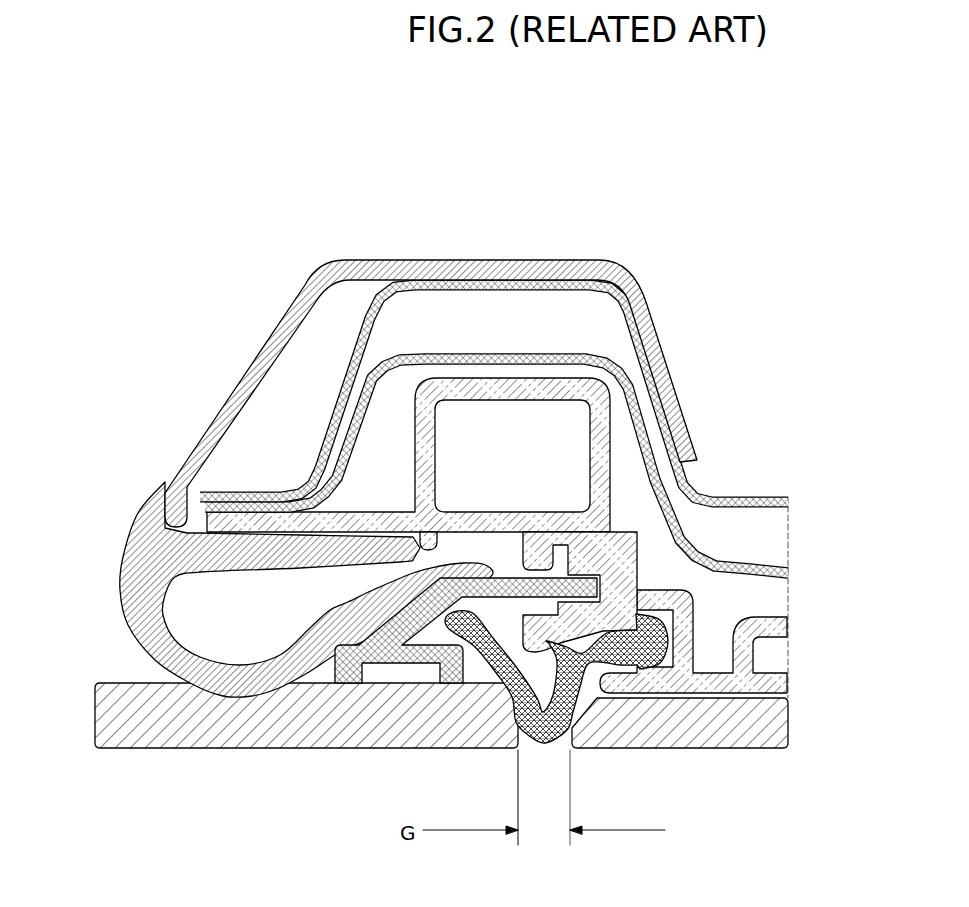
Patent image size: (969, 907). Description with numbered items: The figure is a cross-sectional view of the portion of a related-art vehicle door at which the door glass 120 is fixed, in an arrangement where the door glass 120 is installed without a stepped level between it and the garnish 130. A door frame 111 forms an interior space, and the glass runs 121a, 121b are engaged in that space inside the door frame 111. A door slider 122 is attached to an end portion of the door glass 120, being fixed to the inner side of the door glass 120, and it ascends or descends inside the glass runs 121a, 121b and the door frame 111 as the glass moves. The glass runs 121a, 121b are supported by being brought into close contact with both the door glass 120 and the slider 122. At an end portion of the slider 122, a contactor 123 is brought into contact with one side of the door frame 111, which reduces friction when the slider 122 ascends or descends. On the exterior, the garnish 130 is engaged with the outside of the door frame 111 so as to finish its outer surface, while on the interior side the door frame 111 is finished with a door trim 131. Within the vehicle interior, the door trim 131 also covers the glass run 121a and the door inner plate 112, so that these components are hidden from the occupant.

The door frame 111 is at (695, 612).
The door inner plate 112 is at (752, 495).
The door glass 120 is at (275, 732).
The glass run 121a is at (140, 630).
The glass run 121b is at (588, 697).
The door slider 122 is at (507, 578).
The contactor 123 is at (610, 533).
The garnish 130 is at (717, 730).
The door trim 131 is at (338, 262).